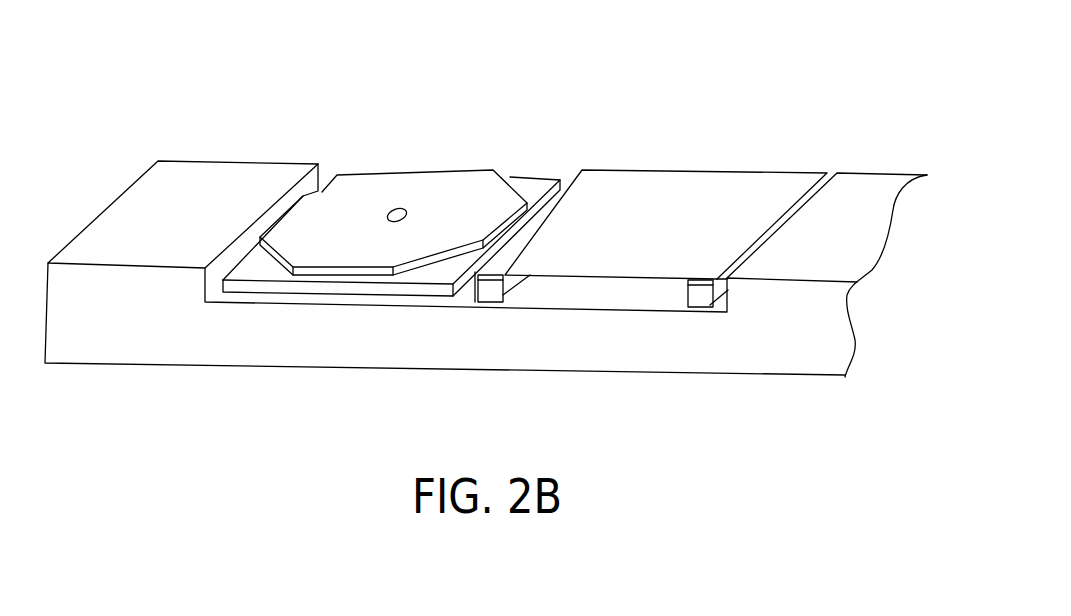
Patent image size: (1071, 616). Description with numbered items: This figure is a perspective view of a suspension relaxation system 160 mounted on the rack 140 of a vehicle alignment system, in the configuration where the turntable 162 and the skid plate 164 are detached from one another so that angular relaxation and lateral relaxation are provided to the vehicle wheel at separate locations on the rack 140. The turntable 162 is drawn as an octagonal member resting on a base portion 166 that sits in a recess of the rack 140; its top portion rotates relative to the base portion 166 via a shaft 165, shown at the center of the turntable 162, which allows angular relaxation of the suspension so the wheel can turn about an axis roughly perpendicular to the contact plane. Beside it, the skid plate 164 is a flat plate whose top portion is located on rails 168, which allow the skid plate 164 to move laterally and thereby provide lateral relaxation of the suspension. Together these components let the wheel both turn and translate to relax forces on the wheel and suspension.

The rack 140 is at (207, 177).
The suspension relaxation system 160 is at (569, 84).
The turntable 162 is at (403, 187).
The skid plate 164 is at (681, 177).
The shaft 165 is at (405, 210).
The base portion 166 is at (422, 291).
The rails 168 is at (700, 295).